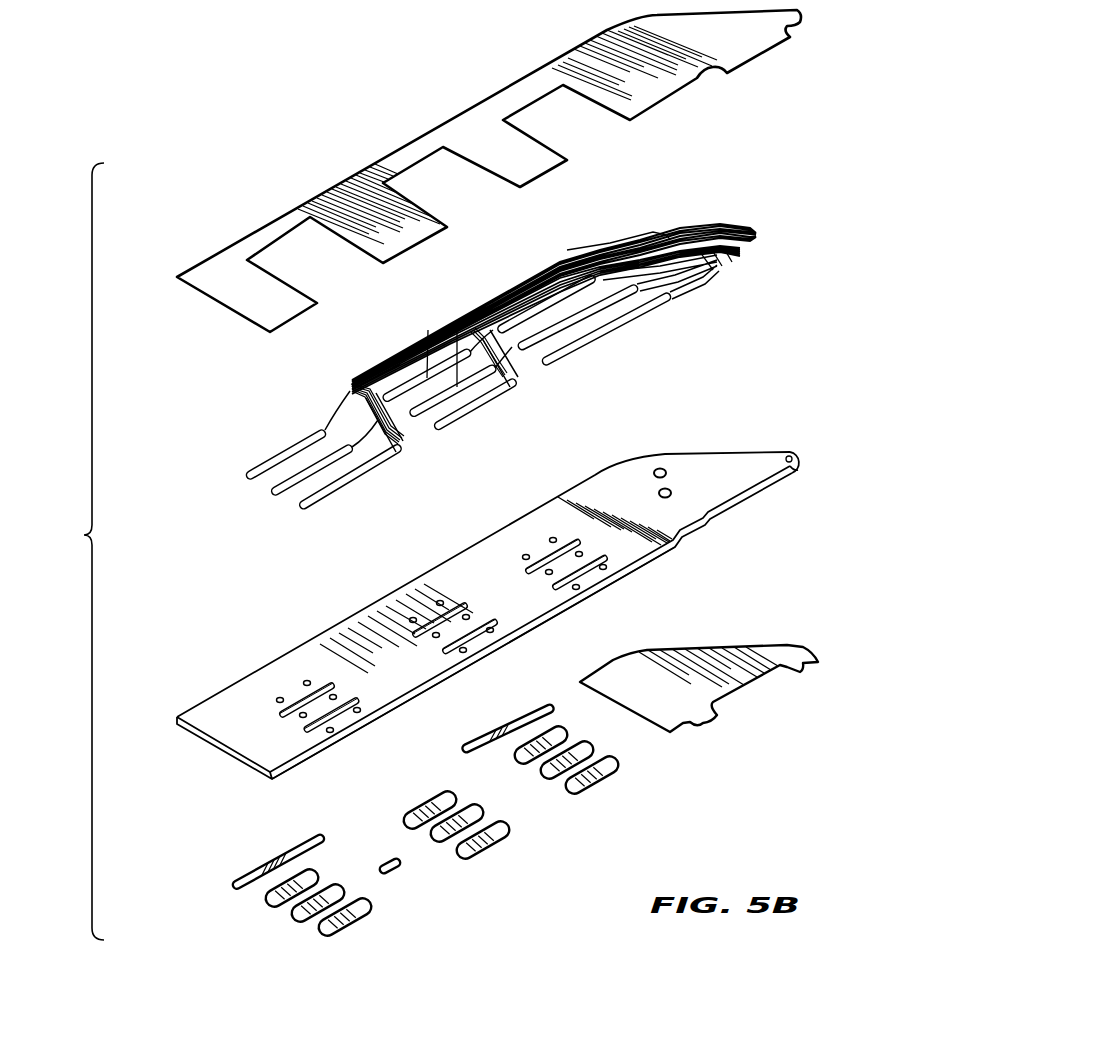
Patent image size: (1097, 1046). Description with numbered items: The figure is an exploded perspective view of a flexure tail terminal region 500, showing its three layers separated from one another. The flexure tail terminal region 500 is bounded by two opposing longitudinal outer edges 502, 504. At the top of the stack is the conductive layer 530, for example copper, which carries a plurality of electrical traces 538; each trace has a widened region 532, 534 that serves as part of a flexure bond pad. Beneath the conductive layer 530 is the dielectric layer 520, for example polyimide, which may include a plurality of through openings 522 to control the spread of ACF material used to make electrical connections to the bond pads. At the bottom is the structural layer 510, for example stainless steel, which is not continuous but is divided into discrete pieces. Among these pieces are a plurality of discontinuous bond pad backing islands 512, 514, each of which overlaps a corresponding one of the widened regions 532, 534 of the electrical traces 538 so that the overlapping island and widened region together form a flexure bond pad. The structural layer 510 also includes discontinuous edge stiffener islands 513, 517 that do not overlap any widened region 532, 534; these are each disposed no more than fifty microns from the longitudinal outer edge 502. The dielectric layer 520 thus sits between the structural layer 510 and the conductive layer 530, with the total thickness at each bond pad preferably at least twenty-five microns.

The flexure tail terminal region 500 is at (68, 551).
The longitudinal outer edge 502 is at (381, 598).
The longitudinal outer edge 504 is at (645, 557).
The structural layer 510 is at (758, 657).
The discontinuous bond pad backing island 512 is at (620, 760).
The discontinuous edge stiffener island 513 is at (283, 853).
The discontinuous bond pad backing island 514 is at (473, 807).
The discontinuous edge stiffener island 517 is at (520, 717).
The dielectric layer 520 is at (758, 463).
The through opening 522 is at (280, 735).
The conductive layer 530 is at (740, 230).
The widened region 532 is at (603, 340).
The widened region 534 is at (483, 317).
The electrical trace 538 is at (770, 247).